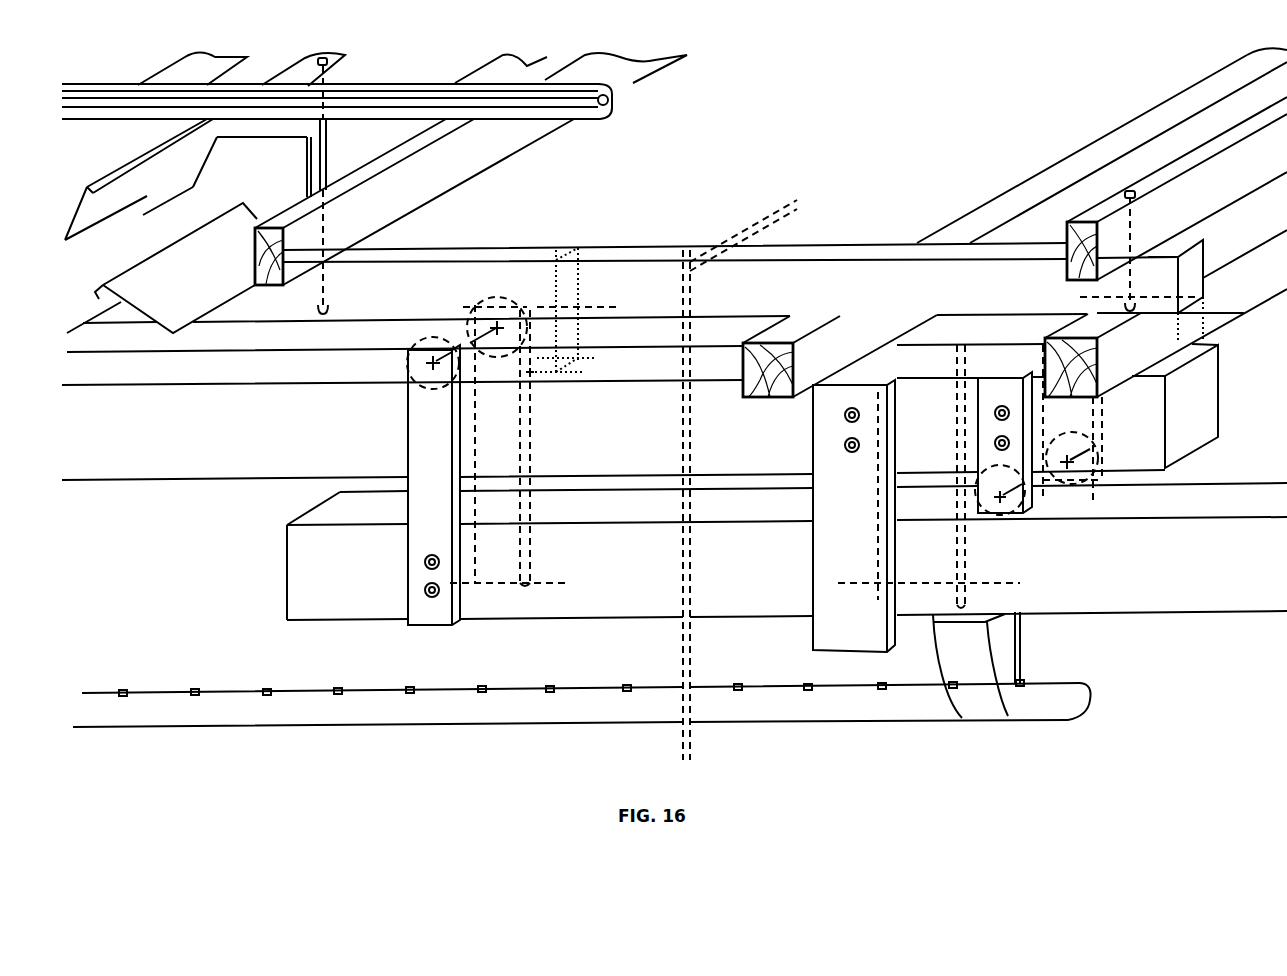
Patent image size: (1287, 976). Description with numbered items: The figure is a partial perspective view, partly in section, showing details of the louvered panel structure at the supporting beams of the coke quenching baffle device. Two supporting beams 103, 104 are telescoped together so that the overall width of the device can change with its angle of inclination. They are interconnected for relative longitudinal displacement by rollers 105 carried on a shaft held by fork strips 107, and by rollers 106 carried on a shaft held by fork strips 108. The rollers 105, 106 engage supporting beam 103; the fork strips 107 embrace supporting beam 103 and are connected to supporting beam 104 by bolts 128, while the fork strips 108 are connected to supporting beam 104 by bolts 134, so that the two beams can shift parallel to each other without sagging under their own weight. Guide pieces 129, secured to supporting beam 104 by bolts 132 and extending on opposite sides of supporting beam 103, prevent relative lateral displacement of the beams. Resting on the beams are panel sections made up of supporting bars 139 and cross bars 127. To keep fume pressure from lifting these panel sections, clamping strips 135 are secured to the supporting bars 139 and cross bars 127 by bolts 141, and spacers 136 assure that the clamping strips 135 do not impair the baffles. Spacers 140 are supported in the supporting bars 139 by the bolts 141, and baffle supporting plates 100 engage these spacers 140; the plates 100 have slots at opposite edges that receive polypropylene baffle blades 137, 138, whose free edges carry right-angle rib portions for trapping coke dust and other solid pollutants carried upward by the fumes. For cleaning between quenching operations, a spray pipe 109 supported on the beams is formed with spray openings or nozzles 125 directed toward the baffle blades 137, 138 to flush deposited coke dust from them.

The baffle supporting plate 100 is at (256, 189).
The supporting beam 103 is at (162, 468).
The supporting beam 104 is at (300, 582).
The roller 105 is at (432, 341).
The roller 106 is at (1043, 497).
The fork strip 107 is at (425, 443).
The fork strip 108 is at (993, 465).
The spray pipe 109 is at (345, 718).
The spray openings or nozzles 125 is at (337, 690).
The cross bar 127 is at (977, 220).
The bolt 128 is at (425, 592).
The guide piece 129 is at (873, 573).
The bolt 132 is at (840, 448).
The bolt 134 is at (993, 443).
The clamping strip 135 is at (368, 80).
The spacer 136 is at (612, 103).
The baffle blade 137 is at (168, 193).
The baffle blade 138 is at (188, 286).
The supporting bar 139 is at (462, 256).
The spacer 140 is at (365, 224).
The bolt 141 is at (318, 170).